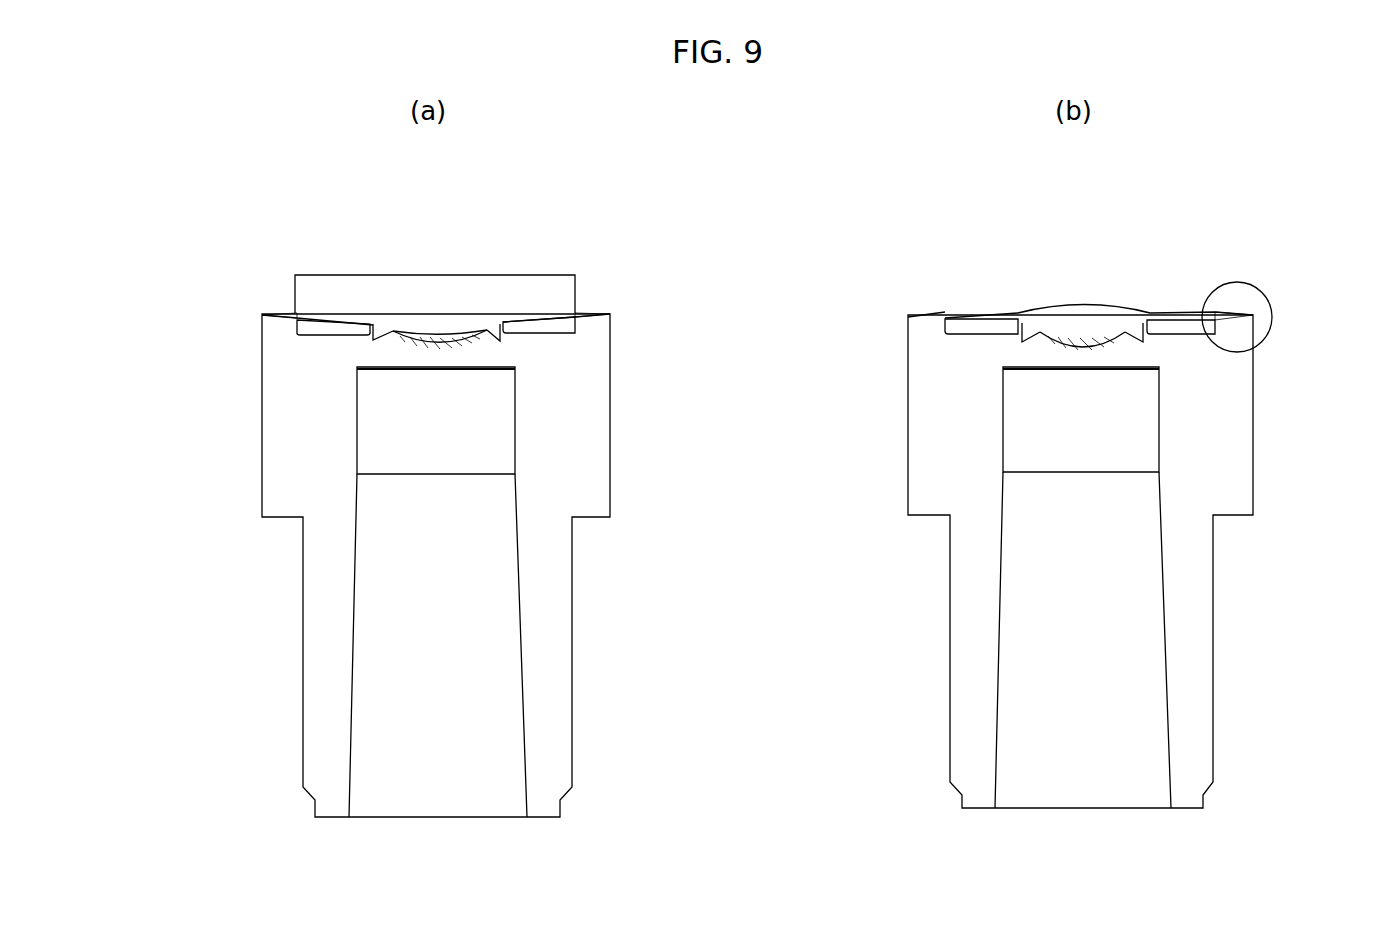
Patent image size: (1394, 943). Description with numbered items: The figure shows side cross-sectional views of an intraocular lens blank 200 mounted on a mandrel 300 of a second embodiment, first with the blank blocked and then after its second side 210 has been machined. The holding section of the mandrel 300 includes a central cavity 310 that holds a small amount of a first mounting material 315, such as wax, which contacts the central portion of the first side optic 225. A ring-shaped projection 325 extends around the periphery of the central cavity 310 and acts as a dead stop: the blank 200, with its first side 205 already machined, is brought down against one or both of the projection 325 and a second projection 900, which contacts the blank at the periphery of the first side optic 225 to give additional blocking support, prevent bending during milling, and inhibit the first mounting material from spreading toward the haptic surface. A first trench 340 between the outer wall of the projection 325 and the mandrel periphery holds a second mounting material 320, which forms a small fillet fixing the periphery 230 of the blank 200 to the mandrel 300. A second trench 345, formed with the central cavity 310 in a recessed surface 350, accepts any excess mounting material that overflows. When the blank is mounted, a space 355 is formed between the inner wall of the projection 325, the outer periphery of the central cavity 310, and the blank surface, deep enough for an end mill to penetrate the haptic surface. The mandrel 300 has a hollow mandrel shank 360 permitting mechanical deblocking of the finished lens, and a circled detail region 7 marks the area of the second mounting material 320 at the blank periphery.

The detail region shown in FIG. 7 is at (1248, 280).
The intraocular lens blank 200 is at (477, 282).
The first side 205 is at (303, 320).
The second side 210 is at (320, 275).
The first side optic 225 is at (463, 333).
The periphery 230 is at (575, 298).
The mandrel 300 is at (275, 647).
The central cavity 310 is at (357, 370).
The first mounting material 315 is at (440, 335).
The second mounting material 320 is at (598, 314).
The projection 325 is at (262, 320).
The first trench 340 is at (280, 313).
The second trench 345 is at (502, 340).
The recessed surface 350 is at (340, 318).
The space 355 is at (532, 325).
The hollow mandrel shank 360 is at (549, 630).
The second projection 900 is at (505, 328).